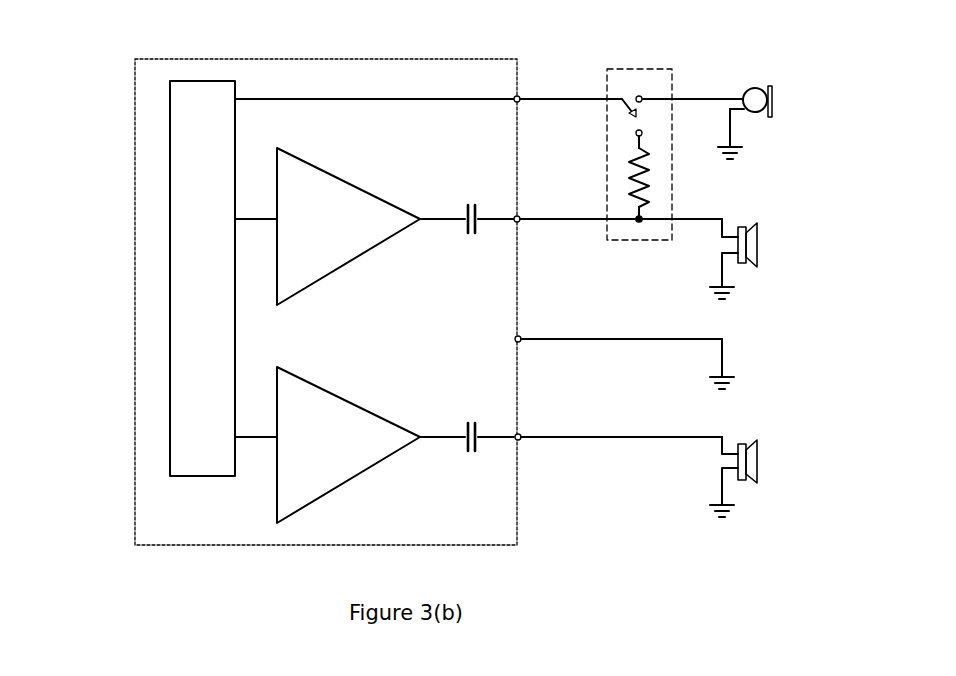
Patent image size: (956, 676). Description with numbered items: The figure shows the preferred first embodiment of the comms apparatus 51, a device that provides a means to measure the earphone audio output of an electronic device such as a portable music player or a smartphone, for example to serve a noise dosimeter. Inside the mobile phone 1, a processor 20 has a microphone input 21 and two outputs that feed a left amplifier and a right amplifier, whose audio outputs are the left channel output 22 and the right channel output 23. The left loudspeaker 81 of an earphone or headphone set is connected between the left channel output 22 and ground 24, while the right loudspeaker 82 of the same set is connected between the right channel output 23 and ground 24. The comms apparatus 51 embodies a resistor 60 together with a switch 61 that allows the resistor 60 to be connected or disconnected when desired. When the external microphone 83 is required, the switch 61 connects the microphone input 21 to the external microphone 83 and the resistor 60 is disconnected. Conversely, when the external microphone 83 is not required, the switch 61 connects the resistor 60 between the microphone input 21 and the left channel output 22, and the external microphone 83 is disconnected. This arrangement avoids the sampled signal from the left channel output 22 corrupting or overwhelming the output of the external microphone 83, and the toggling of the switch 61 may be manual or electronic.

The mobile phone 1 is at (107, 432).
The processor 20 is at (178, 253).
The microphone input 21 is at (520, 96).
The left channel output 22 is at (520, 222).
The right channel output 23 is at (520, 433).
The ground 24 is at (520, 342).
The comms apparatus 51 is at (682, 73).
The resistor 60 is at (650, 173).
The switch 61 is at (622, 103).
The left loudspeaker 81 is at (750, 222).
The right loudspeaker 82 is at (752, 437).
The external microphone 83 is at (757, 85).